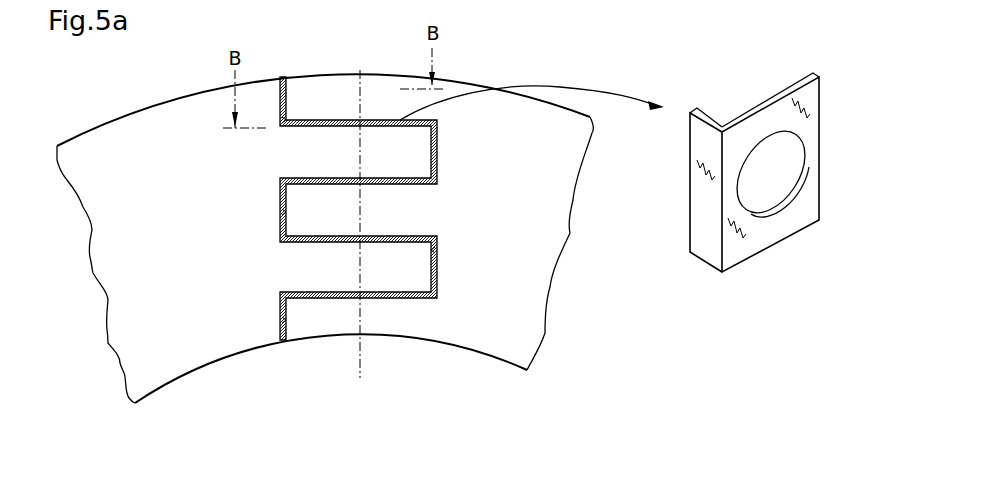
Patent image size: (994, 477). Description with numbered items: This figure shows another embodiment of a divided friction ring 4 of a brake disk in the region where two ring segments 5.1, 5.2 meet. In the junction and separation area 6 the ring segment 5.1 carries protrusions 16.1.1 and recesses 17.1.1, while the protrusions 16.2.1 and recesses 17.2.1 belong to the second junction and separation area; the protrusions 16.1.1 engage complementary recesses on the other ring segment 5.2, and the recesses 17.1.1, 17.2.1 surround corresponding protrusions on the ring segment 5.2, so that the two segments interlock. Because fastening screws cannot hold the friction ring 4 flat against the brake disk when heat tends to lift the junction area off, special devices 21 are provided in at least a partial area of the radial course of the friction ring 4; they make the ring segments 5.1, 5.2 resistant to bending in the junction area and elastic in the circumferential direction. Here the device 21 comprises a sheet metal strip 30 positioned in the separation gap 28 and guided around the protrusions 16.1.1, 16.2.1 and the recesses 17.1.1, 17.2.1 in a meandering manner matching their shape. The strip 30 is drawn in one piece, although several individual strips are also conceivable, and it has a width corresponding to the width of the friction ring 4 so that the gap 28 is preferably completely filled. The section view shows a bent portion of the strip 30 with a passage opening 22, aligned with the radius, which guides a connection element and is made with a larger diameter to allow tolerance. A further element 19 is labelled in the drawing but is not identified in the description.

The friction ring 4 is at (473, 60).
The ring segment 5.1 is at (548, 207).
The ring segment 5.2 is at (151, 140).
The junction and separation area 6 is at (315, 62).
The protrusion 16.1.1 is at (360, 206).
The protrusion 16.2.1 is at (360, 209).
The recess 17.1.1 is at (435, 245).
The recess 17.2.1 is at (286, 112).
The connecting web 19 is at (297, 244).
The device 21 is at (407, 184).
The passage opening 22 is at (792, 177).
The separation gap 28 is at (437, 270).
The sheet metal strip 30 is at (803, 218).